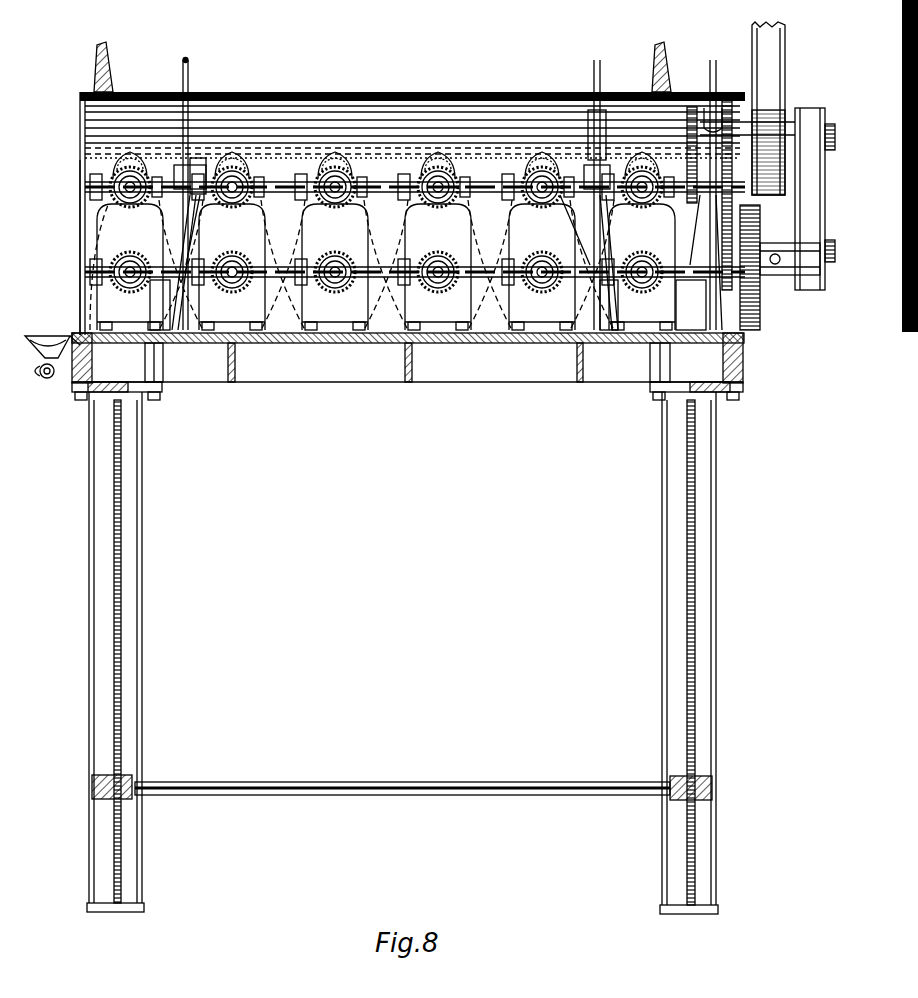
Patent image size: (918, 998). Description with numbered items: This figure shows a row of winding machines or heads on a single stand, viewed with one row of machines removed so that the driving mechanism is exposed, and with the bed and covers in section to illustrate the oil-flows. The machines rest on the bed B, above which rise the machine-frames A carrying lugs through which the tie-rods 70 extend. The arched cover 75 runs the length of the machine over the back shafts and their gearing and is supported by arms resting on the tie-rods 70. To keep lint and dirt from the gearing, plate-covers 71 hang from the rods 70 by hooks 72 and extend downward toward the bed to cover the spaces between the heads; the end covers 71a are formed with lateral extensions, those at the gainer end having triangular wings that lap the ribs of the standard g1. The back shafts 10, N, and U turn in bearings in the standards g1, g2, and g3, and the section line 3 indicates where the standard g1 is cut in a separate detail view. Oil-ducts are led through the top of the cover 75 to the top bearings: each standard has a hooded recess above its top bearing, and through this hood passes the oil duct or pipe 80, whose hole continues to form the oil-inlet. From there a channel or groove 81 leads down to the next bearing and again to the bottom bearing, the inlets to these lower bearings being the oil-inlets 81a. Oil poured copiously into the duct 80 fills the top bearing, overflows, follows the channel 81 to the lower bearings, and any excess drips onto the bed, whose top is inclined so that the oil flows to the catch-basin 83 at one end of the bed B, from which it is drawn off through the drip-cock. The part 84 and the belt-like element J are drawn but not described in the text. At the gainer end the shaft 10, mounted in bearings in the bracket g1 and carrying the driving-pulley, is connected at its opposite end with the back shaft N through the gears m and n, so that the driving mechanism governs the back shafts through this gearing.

The tie-rods 70 is at (80, 152).
The arched cover 75 is at (283, 96).
The plate-covers 71 is at (415, 242).
The end covers 71a is at (80, 208).
The hooks 72 is at (252, 156).
The oil duct or pipe 80 is at (186, 92).
The channel or groove 81 is at (190, 222).
The oil-inlets 81a is at (668, 212).
The catch-basin 83 is at (50, 335).
The adjusting screw 84 is at (48, 379).
The shaft 10 is at (628, 140).
The section line 3 3 is at (716, 108).
The machine-frame A is at (382, 241).
The bed B is at (408, 366).
The back shaft N is at (515, 196).
The back shaft U is at (352, 265).
The gear m is at (700, 108).
The gear n is at (722, 205).
The standard g1 is at (691, 305).
The standard g2 is at (600, 300).
The standard g3 is at (160, 310).
The belt J is at (788, 88).